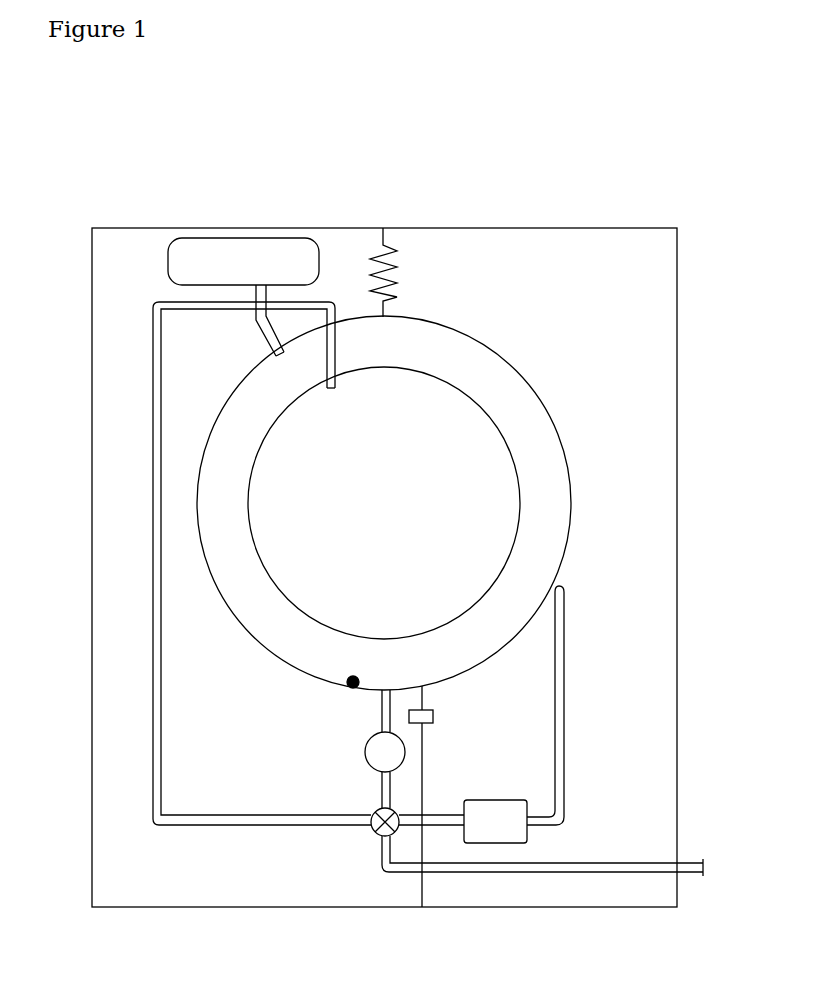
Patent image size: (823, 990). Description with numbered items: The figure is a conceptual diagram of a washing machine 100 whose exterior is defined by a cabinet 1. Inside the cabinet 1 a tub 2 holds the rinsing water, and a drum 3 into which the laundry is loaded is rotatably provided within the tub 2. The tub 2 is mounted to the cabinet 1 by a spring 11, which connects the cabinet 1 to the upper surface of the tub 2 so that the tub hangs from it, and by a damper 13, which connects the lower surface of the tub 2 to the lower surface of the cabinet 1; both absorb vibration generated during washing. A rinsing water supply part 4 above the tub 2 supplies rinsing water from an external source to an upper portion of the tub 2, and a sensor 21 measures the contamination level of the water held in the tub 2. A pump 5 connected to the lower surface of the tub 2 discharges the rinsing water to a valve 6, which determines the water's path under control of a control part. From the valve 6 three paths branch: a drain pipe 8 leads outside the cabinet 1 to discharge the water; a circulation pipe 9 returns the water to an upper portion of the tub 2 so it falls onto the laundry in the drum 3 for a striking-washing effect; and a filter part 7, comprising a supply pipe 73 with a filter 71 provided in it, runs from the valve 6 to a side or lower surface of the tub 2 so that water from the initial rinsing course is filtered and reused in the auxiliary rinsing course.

The washing machine 100 is at (700, 140).
The cabinet 1 is at (568, 228).
The rinsing water supply part 4 is at (235, 248).
The spring 11 is at (390, 250).
The tub 2 is at (572, 480).
The drum 3 is at (521, 518).
The sensor 21 is at (350, 681).
The circulation pipe 9 is at (215, 826).
The pump 5 is at (372, 758).
The valve 6 is at (378, 835).
The filter 71 is at (497, 833).
The supply pipe 73 is at (564, 731).
The filter part 7 is at (572, 766).
The drain pipe 8 is at (697, 875).
The damper 13 is at (423, 890).